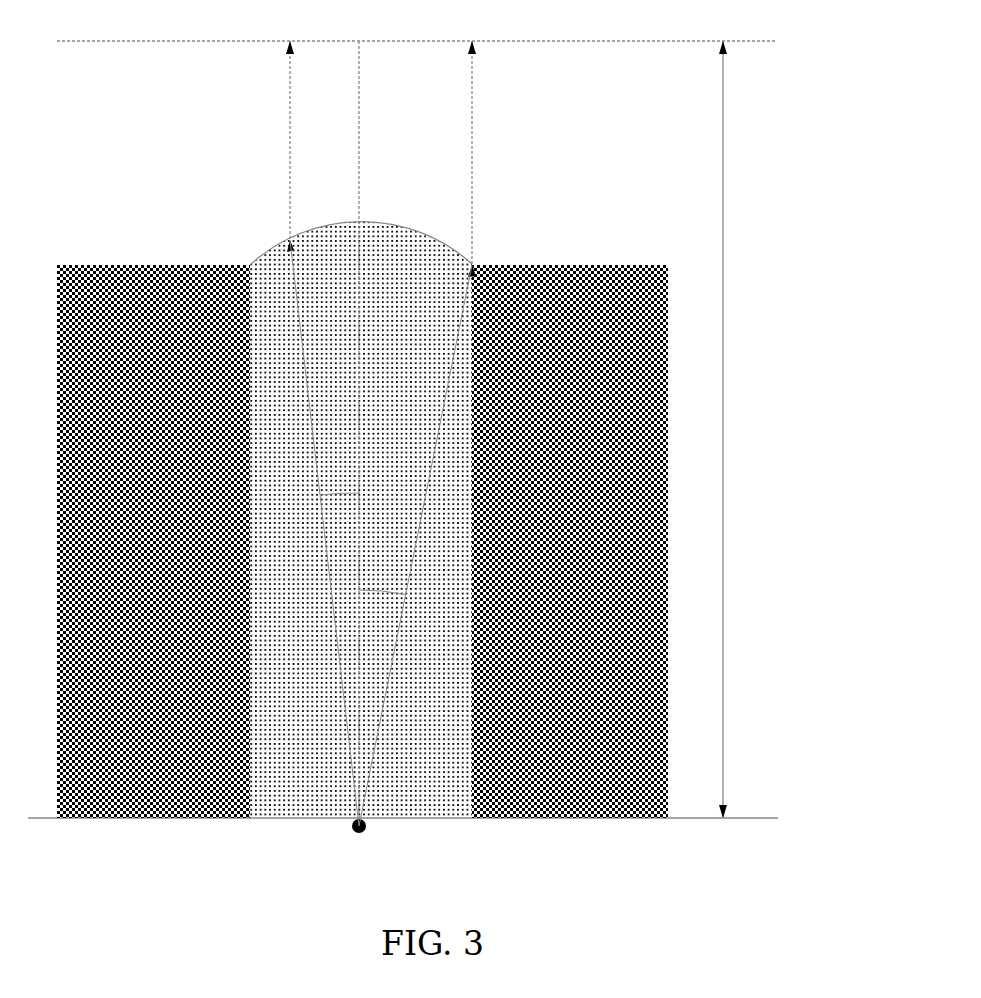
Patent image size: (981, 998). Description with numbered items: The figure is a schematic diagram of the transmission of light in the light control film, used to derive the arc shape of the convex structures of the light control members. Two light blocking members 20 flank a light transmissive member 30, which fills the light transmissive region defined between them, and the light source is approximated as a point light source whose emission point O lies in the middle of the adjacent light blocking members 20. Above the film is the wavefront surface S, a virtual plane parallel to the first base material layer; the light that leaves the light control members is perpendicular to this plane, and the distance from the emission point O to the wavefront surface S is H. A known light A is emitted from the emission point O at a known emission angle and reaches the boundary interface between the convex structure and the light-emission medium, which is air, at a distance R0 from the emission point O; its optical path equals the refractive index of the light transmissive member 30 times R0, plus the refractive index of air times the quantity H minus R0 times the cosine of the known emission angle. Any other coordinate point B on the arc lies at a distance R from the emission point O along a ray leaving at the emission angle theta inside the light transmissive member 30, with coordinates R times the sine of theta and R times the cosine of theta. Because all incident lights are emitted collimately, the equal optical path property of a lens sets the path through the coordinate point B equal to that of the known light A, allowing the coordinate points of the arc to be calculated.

The light blocking members 20 is at (118, 818).
The light transmissive members 30 is at (423, 818).
The wavefront surface S is at (436, 43).
The distance from the light source emission point to the wavefront surface H is at (733, 429).
The emission point O is at (359, 451).
The light A is at (482, 159).
The coordinate point B is at (282, 146).
The distance between the emission point and the coordinate point R is at (324, 533).
The distance from the light source emission point to the boundary interface R0 is at (415, 545).